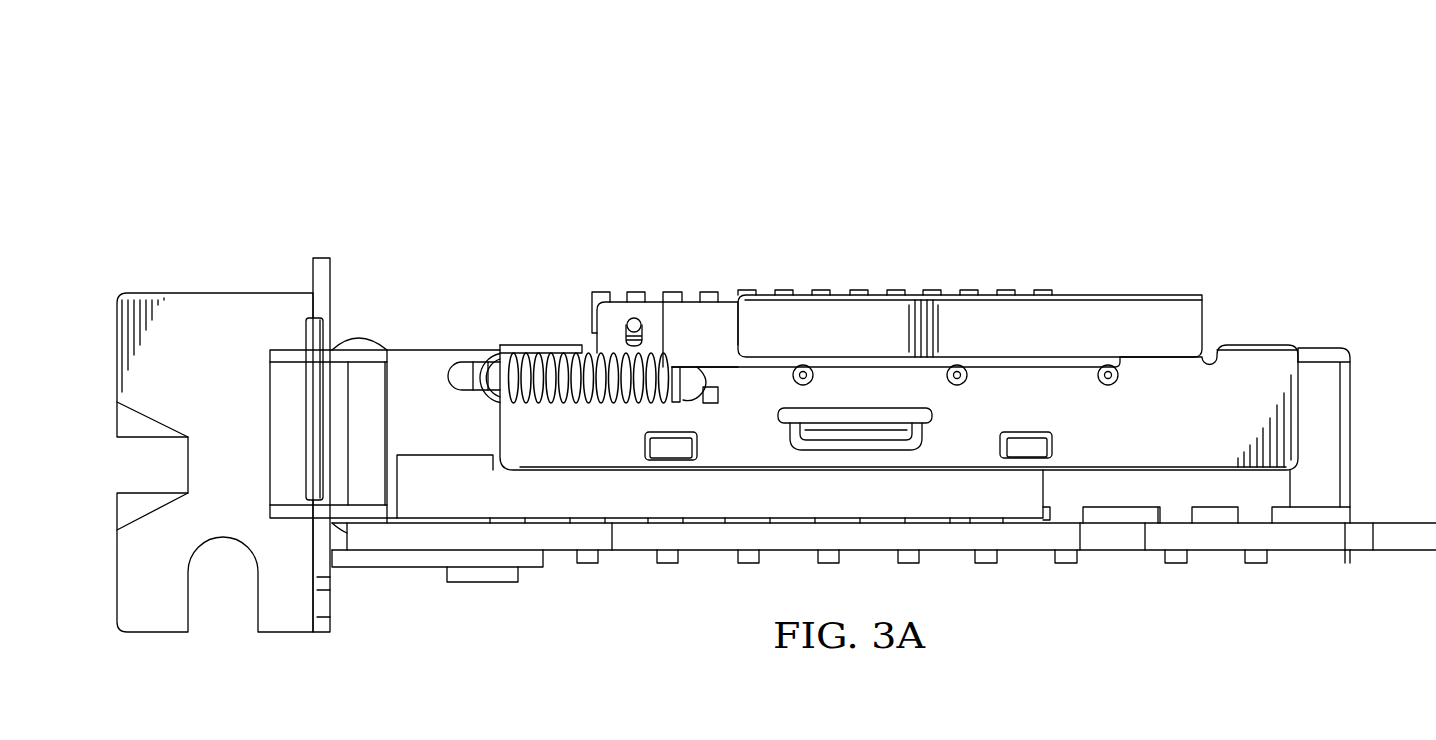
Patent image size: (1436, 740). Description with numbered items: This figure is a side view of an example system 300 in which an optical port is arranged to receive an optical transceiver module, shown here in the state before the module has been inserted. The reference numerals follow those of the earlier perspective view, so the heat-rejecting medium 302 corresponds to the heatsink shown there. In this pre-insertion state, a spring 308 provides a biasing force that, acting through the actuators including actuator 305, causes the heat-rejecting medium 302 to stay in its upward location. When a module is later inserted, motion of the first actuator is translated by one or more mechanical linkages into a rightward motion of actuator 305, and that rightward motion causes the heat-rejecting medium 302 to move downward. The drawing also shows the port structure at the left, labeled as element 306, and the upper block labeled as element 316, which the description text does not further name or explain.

The system 300 is at (466, 96).
The heat-rejecting medium 302 is at (590, 307).
The actuator 305 is at (693, 310).
The faceplate block 306 is at (243, 293).
The spring 308 is at (583, 402).
The cover block 316 is at (1125, 292).